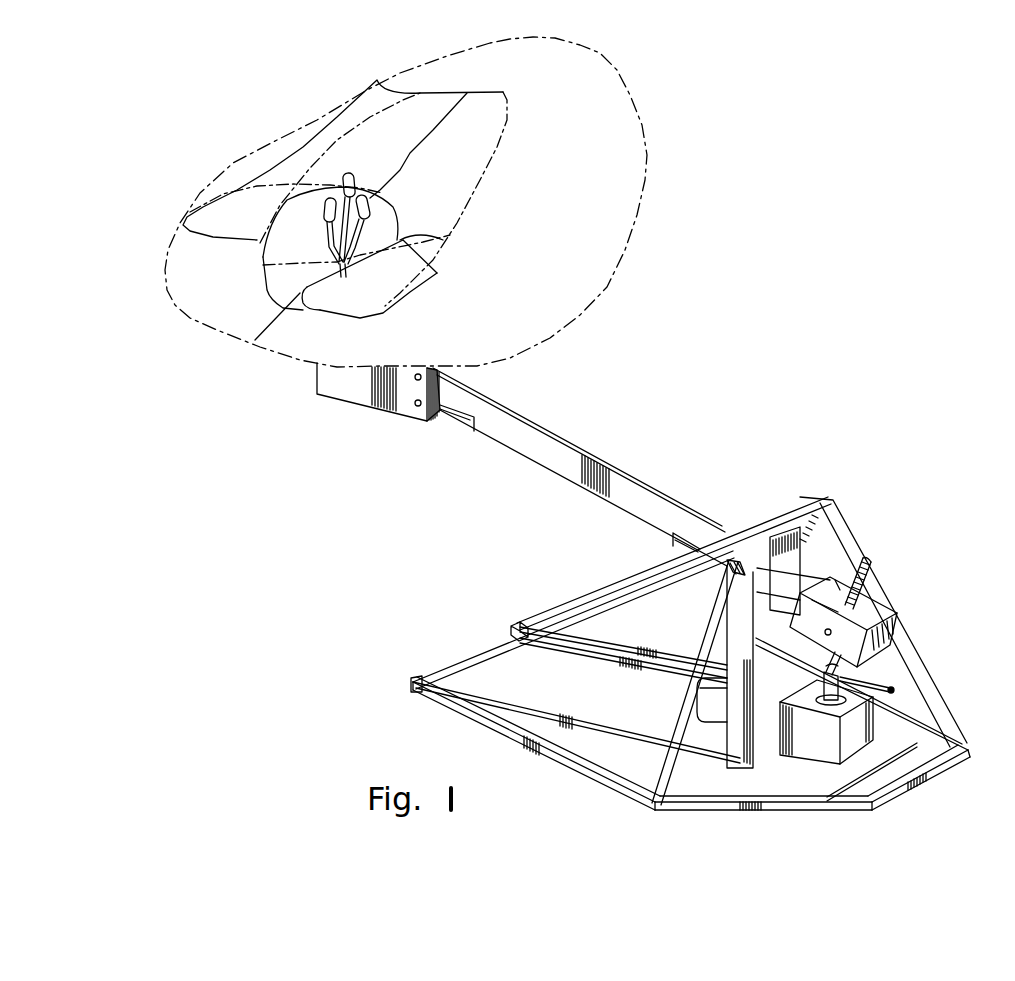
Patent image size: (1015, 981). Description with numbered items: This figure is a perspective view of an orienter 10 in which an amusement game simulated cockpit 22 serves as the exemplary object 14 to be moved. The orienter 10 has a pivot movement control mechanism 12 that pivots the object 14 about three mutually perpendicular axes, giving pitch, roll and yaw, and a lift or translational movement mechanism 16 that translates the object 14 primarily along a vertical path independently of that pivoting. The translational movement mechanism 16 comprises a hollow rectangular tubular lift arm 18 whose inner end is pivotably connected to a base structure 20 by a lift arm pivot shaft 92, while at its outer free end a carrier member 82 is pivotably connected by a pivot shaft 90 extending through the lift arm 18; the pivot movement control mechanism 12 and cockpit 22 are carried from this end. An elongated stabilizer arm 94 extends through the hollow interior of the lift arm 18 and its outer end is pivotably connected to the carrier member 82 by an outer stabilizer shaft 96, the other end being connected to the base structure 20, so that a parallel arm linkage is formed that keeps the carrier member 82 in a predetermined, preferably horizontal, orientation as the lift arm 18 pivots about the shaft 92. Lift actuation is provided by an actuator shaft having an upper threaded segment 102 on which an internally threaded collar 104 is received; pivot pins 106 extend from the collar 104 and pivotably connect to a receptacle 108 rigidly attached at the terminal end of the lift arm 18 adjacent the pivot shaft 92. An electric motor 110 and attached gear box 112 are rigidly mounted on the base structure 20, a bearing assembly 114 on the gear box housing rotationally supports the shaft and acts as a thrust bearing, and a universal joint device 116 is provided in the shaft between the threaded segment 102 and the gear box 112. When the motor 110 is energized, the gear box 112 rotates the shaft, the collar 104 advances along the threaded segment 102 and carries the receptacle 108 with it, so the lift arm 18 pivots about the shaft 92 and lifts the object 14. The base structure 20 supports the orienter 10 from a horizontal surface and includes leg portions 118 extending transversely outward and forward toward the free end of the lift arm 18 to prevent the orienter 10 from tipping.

The orienter 10 is at (672, 370).
The pivot movement control mechanism 12 is at (314, 369).
The object 14 is at (650, 164).
The lift or translational movement mechanism 16 is at (845, 512).
The lift arm 18 is at (528, 441).
The base structure 20 is at (777, 803).
The amusement game simulated cockpit 22 is at (262, 342).
The carrier member 82 is at (343, 393).
The pivot shaft 90 is at (424, 368).
The lift arm pivot shaft 92 is at (732, 556).
The stabilizer arm 94 is at (460, 418).
The outer stabilizer shaft 96 is at (420, 405).
The upper threaded segment 102 is at (870, 568).
The internally threaded collar 104 is at (884, 602).
The pivot pins 106 is at (833, 633).
The receptacle 108 is at (878, 648).
The electric motor 110 is at (708, 692).
The gear box 112 is at (856, 752).
The bearing assembly 114 is at (877, 735).
The universal joint device 116 is at (892, 689).
The leg portions 118 is at (600, 650).